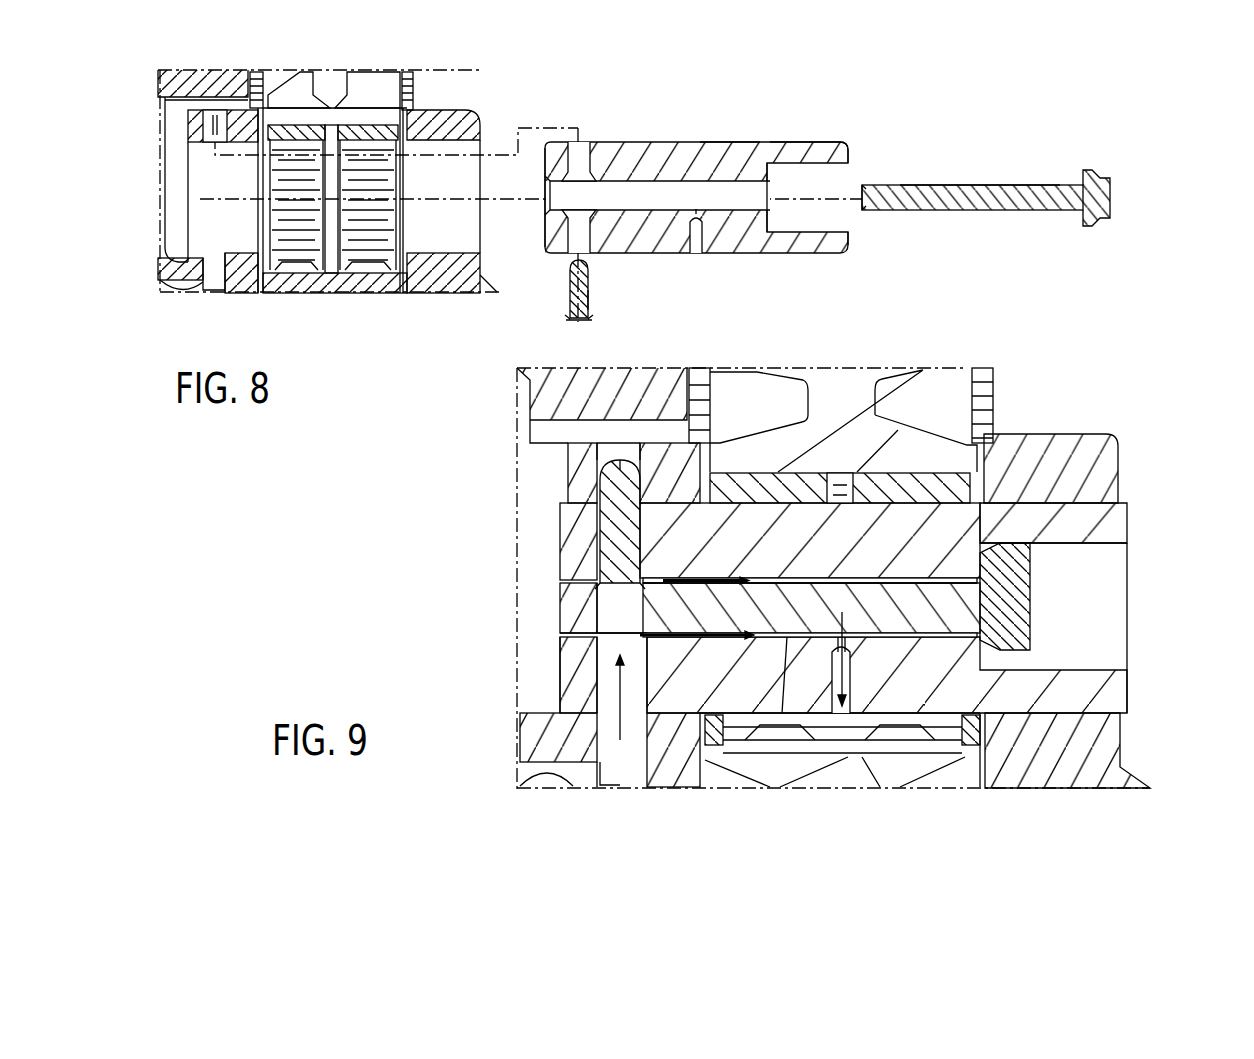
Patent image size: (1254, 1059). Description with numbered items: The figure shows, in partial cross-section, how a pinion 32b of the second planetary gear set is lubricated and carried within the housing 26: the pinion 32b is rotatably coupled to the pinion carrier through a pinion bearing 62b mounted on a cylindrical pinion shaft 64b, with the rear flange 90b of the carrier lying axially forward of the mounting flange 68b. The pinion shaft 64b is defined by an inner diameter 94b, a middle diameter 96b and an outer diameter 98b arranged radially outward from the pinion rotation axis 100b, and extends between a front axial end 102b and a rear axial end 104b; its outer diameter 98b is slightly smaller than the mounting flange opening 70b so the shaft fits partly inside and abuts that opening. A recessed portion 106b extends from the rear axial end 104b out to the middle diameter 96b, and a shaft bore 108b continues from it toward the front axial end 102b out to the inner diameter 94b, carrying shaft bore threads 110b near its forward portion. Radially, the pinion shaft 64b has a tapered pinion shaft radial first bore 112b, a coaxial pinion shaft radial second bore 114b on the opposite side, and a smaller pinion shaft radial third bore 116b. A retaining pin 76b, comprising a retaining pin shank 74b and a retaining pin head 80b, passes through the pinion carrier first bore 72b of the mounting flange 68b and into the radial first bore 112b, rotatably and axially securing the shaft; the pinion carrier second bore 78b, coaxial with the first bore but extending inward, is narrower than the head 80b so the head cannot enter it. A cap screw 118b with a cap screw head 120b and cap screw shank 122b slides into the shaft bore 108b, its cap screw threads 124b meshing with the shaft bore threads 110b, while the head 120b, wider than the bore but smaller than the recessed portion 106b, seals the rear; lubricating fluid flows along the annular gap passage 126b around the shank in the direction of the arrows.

In FIG. 8, the housing 26 is at (236, 78).
In FIG. 9, the housing 26 is at (542, 397).
In FIG. 8, the pinion 32b is at (392, 97).
In FIG. 9, the pinion 32b is at (975, 400).
In FIG. 8, the pinion bearing 62b is at (355, 167).
In FIG. 9, the pinion bearing 62b is at (907, 727).
In FIG. 8, the pinion shaft 64b is at (678, 145).
In FIG. 9, the pinion shaft 64b is at (1080, 697).
In FIG. 8, the mounting flange 68b is at (196, 120).
In FIG. 9, the mounting flange 68b is at (580, 472).
In FIG. 8, the mounting flange opening 70b is at (202, 240).
In FIG. 9, the mounting flange opening 70b is at (575, 500).
In FIG. 8, the pinion carrier first bore 72b is at (220, 118).
In FIG. 9, the pinion carrier first bore 72b is at (612, 457).
In FIG. 8, the retaining pin shank 74b is at (580, 296).
In FIG. 9, the retaining pin shank 74b is at (610, 505).
In FIG. 8, the retaining pin 76b is at (592, 305).
In FIG. 9, the retaining pin 76b is at (630, 482).
In FIG. 8, the pinion carrier second bore 78b is at (213, 277).
In FIG. 9, the pinion carrier second bore 78b is at (610, 766).
In FIG. 8, the retaining pin head 80b is at (578, 320).
In FIG. 9, the retaining pin head 80b is at (562, 632).
In FIG. 8, the rear flange 90b is at (452, 280).
In FIG. 9, the rear flange 90b is at (1095, 743).
In FIG. 8, the inner diameter 94b is at (722, 160).
In FIG. 9, the inner diameter 94b is at (760, 638).
In FIG. 8, the middle diameter 96b is at (800, 142).
In FIG. 9, the middle diameter 96b is at (1100, 543).
In FIG. 8, the outer diameter 98b is at (848, 148).
In FIG. 9, the outer diameter 98b is at (910, 503).
In FIG. 8, the pinion rotation axis 100b is at (447, 200).
In FIG. 8, the front axial end 102b is at (545, 220).
In FIG. 9, the front axial end 102b is at (557, 712).
In FIG. 8, the rear axial end 104b is at (852, 152).
In FIG. 9, the rear axial end 104b is at (1127, 697).
In FIG. 8, the recessed portion 106b is at (812, 222).
In FIG. 9, the recessed portion 106b is at (1103, 593).
In FIG. 8, the shaft bore 108b is at (608, 188).
In FIG. 8, the shaft bore threads 110b is at (552, 177).
In FIG. 9, the shaft bore threads 110b is at (590, 677).
In FIG. 8, the pinion shaft radial first bore 112b is at (583, 157).
In FIG. 9, the pinion shaft radial first bore 112b is at (617, 565).
In FIG. 8, the pinion shaft radial second bore 114b is at (587, 237).
In FIG. 9, the pinion shaft radial second bore 114b is at (600, 748).
In FIG. 8, the pinion shaft radial third bore 116b is at (700, 238).
In FIG. 9, the pinion shaft radial third bore 116b is at (836, 705).
In FIG. 8, the cap screw 118b is at (1037, 172).
In FIG. 9, the cap screw 118b is at (962, 592).
In FIG. 8, the cap screw head 120b is at (1111, 196).
In FIG. 9, the cap screw head 120b is at (1007, 593).
In FIG. 8, the cap screw shank 122b is at (1045, 200).
In FIG. 9, the cap screw shank 122b is at (850, 613).
In FIG. 8, the cap screw threads 124b is at (872, 207).
In FIG. 9, the cap screw threads 124b is at (590, 677).
In FIG. 9, the annular gap passage 126b is at (782, 713).